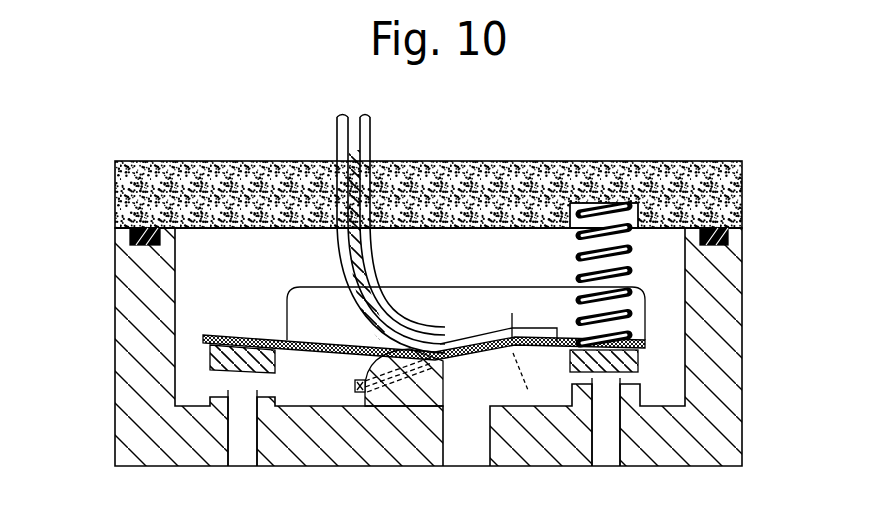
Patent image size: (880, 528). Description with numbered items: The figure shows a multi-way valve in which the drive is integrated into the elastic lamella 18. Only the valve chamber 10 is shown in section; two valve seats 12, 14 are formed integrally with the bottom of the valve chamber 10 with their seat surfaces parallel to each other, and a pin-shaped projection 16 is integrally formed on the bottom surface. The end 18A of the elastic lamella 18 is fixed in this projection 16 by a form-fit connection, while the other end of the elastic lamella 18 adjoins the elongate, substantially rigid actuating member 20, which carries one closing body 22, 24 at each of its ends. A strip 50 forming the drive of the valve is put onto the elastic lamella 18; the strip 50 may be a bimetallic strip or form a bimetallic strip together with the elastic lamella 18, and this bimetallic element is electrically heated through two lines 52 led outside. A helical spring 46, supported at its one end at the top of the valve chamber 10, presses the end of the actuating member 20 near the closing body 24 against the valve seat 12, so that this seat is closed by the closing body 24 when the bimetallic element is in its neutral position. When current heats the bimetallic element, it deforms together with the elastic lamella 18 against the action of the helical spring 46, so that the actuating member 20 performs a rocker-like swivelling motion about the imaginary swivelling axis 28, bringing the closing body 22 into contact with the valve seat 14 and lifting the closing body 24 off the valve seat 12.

The valve chamber 10 is at (140, 418).
The valve seat 12 is at (607, 380).
The valve seat 14 is at (247, 392).
The pin-shaped projection 16 is at (405, 386).
The elastic lamella 18 is at (462, 362).
The end of elastic lamella 18A is at (353, 387).
The actuating member 20 is at (428, 287).
The closing body 22 is at (210, 364).
The closing body 24 is at (640, 362).
The swivelling axis 28 is at (533, 378).
The helical spring 46 is at (575, 258).
The strip 50 is at (490, 336).
The lines 52 is at (358, 148).